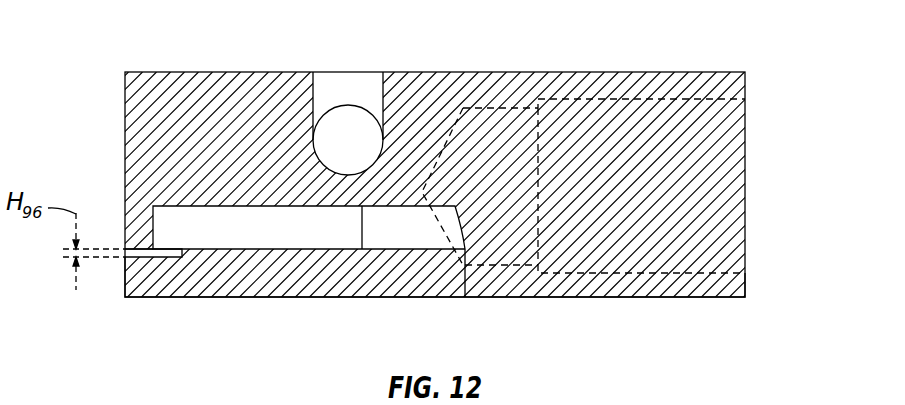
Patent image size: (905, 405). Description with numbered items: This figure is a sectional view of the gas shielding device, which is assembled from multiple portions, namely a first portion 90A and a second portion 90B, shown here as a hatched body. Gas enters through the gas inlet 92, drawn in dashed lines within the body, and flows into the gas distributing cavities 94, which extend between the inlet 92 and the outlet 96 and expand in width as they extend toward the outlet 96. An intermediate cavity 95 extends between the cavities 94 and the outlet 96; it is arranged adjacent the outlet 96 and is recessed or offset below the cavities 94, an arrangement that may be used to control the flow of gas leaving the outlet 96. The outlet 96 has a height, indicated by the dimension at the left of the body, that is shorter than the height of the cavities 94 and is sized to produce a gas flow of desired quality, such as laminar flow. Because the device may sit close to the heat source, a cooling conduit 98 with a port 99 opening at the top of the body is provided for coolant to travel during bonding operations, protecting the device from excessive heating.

The first portion 90A is at (573, 73).
The second portion 90B is at (293, 298).
The gas inlet 92 is at (651, 199).
The gas distributing cavities 94 is at (270, 240).
The intermediate cavity 95 is at (154, 253).
The outlet 96 is at (128, 250).
The cooling conduits 98 is at (348, 106).
The ports 99 is at (330, 72).